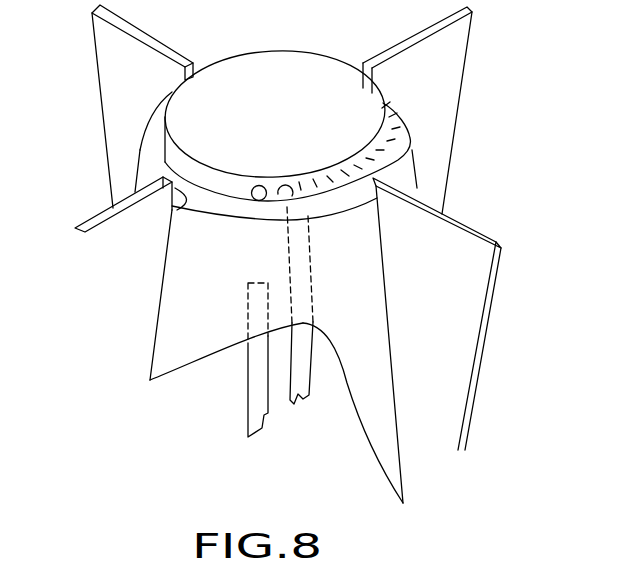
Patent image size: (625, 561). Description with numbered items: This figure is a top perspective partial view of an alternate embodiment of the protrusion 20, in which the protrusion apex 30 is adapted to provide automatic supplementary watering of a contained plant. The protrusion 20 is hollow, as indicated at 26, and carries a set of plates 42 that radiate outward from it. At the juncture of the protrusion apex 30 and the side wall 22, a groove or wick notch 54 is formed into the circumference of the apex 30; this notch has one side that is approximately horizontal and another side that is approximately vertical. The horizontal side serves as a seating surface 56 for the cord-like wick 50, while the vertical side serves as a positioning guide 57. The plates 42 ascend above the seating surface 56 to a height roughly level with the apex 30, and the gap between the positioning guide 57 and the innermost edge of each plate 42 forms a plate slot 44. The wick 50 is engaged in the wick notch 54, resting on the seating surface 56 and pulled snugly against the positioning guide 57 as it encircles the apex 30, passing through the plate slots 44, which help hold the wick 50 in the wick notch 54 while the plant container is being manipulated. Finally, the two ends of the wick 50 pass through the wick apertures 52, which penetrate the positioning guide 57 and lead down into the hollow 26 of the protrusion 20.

The protrusion 20 is at (342, 94).
The side wall 22 is at (385, 398).
The hollow 26 is at (173, 377).
The protrusion apex 30 is at (280, 115).
The plates 42 is at (115, 95).
The plate slots 44 is at (194, 66).
The wick 50 is at (412, 150).
The wick apertures 52 is at (279, 200).
The wick notch 54 is at (148, 148).
The seating surface 56 is at (228, 214).
The positioning guide 57 is at (176, 207).